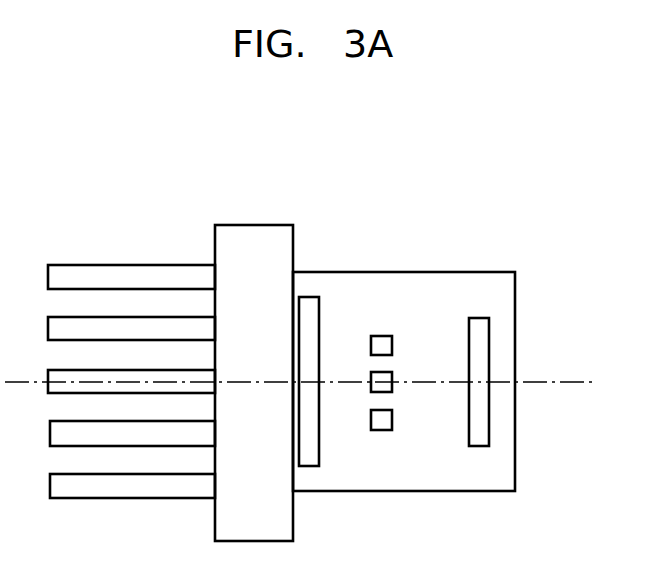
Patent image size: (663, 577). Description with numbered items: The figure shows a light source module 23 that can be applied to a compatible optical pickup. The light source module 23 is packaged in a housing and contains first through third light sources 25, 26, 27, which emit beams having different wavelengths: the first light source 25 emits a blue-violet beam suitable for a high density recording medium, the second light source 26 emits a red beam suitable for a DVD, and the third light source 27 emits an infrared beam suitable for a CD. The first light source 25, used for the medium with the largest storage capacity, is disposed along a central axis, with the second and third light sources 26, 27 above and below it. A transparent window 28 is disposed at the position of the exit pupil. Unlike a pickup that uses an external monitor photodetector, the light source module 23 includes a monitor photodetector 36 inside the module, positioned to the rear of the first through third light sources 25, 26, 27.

The light source module 23 is at (427, 198).
The first light source 25 is at (392, 382).
The second light source 26 is at (392, 345).
The third light source 27 is at (392, 420).
The transparent window 28 is at (481, 316).
The monitor photodetector 36 is at (313, 295).